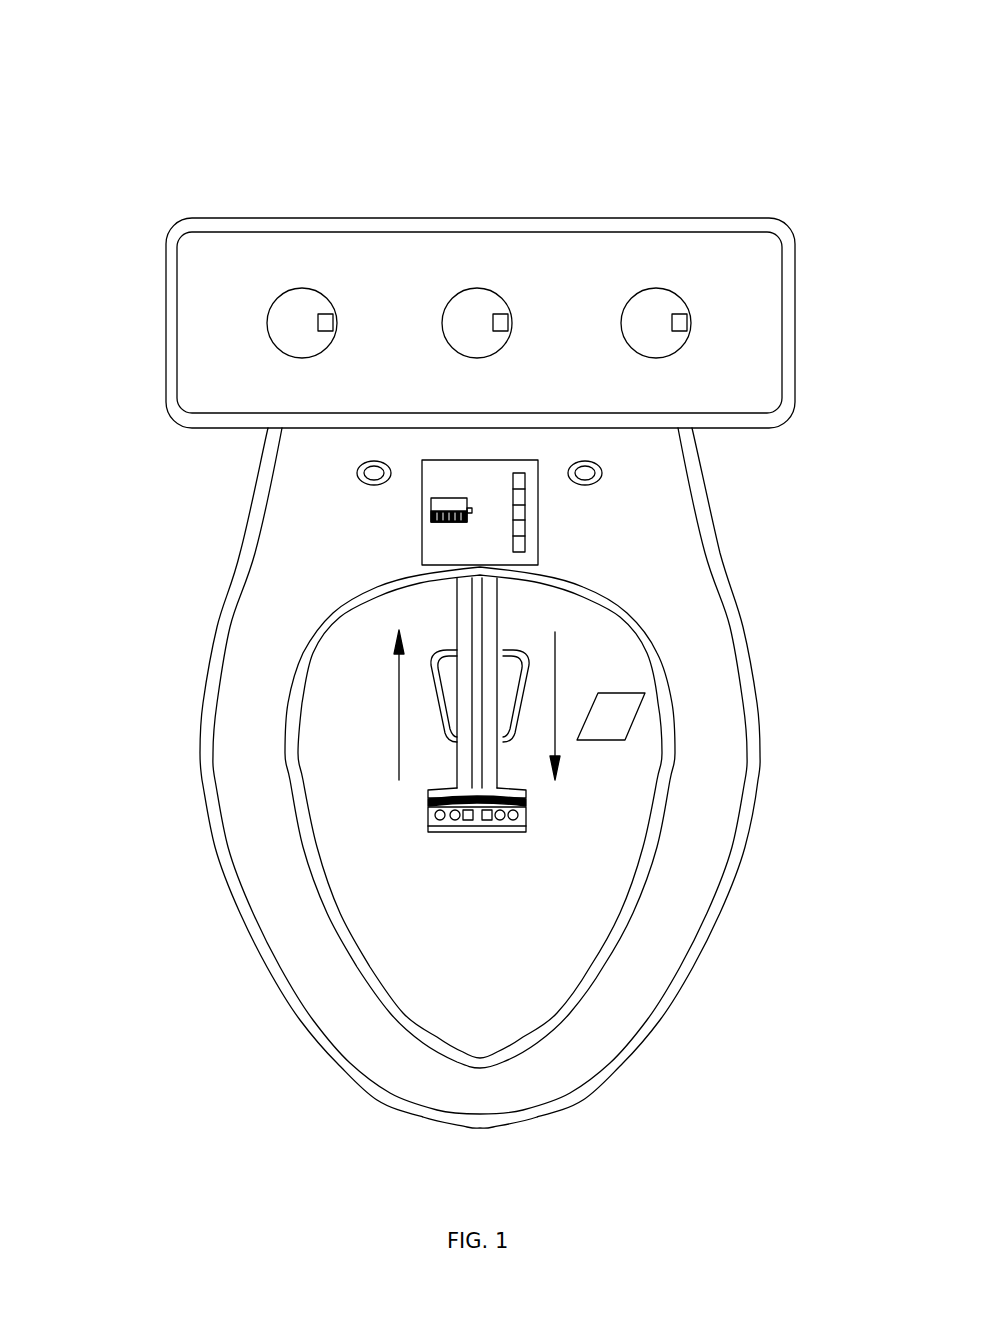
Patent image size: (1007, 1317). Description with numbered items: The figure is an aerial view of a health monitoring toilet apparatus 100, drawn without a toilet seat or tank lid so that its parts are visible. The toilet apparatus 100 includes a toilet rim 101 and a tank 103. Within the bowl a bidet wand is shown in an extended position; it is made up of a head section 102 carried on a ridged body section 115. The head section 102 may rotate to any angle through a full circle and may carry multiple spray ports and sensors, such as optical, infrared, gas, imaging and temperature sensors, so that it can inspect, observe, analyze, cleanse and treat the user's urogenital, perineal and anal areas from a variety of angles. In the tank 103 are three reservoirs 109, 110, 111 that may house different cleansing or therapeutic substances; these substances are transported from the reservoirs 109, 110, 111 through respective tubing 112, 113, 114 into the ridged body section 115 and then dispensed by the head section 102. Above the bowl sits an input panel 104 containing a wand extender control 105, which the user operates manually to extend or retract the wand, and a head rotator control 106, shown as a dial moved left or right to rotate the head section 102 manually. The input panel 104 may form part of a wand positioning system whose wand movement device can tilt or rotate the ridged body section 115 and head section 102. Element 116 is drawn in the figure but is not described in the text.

The toilet apparatus 100 is at (127, 138).
The toilet rim 101 is at (618, 992).
The head section 102 is at (502, 827).
The tank 103 is at (760, 245).
The input panel 104 is at (440, 551).
The wand extender control 105 is at (523, 522).
The head rotator control 106 is at (430, 513).
The reservoir 109 is at (287, 323).
The reservoir 110 is at (477, 343).
The reservoir 111 is at (648, 342).
The tubing 112 is at (333, 320).
The tubing 113 is at (510, 317).
The tubing 114 is at (687, 320).
The ridged body section 115 is at (498, 758).
The sensor patch 116 is at (618, 713).